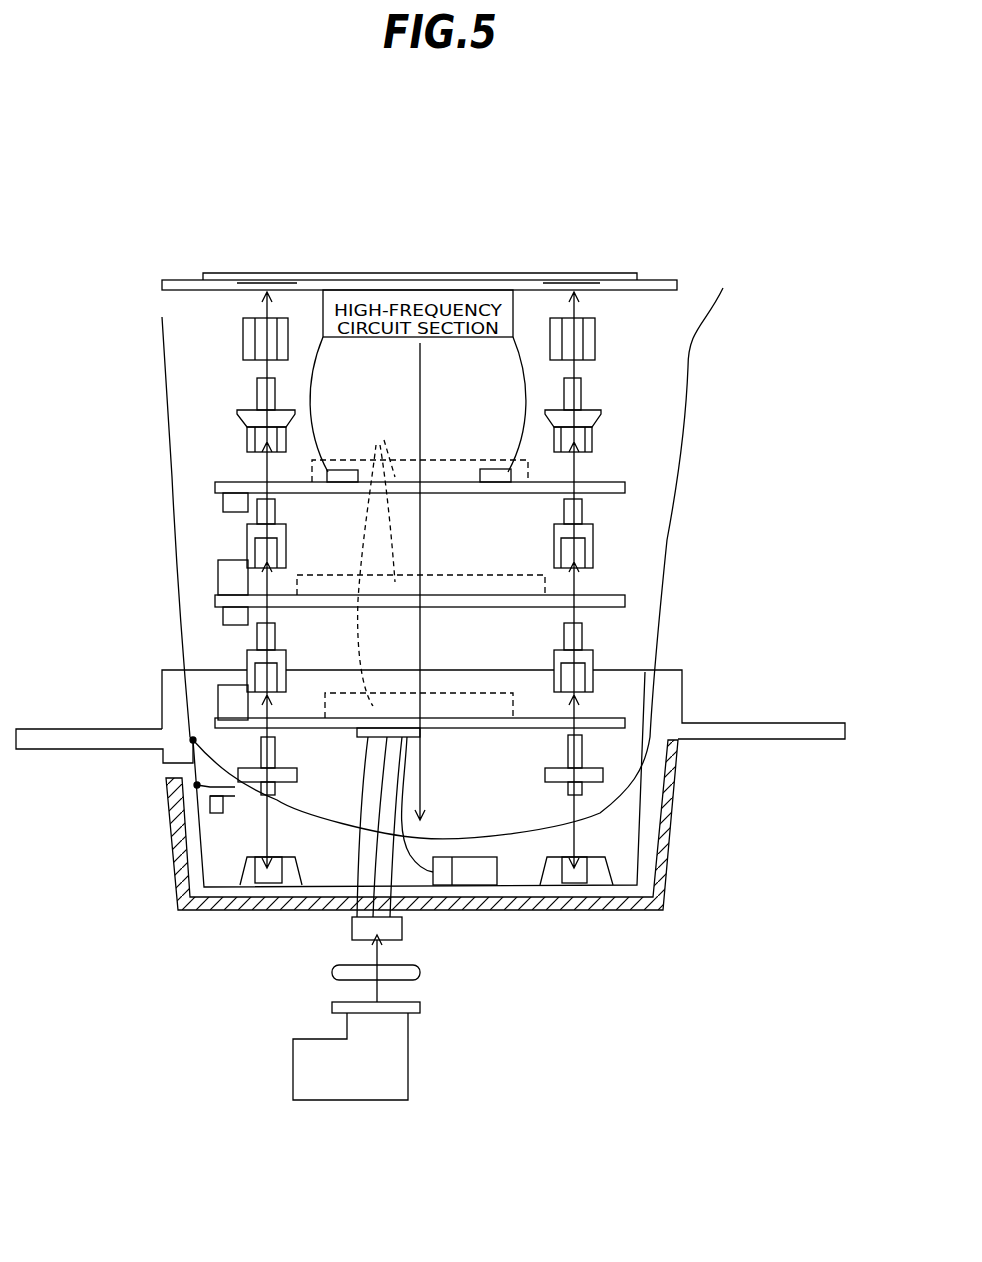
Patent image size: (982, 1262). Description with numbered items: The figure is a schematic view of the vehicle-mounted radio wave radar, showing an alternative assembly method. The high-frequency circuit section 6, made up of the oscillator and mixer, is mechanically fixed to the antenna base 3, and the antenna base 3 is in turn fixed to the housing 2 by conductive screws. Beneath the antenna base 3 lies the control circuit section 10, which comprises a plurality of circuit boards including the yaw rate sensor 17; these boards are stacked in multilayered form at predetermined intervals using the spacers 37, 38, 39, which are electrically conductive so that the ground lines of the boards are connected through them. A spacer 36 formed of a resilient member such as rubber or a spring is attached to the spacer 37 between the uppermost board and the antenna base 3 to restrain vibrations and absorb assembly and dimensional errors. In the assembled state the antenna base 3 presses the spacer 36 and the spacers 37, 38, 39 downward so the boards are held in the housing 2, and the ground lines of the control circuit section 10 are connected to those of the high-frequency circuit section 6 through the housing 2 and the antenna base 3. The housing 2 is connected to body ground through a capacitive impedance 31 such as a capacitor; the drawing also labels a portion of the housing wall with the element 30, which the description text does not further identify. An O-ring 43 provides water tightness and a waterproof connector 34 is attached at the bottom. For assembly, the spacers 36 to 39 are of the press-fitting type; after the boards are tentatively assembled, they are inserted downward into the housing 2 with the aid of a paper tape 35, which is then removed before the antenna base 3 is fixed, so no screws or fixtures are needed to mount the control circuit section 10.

The housing 2 is at (200, 888).
The antenna base 3 is at (183, 280).
The high-frequency circuit section 6 is at (335, 297).
The control circuit section 10 is at (378, 447).
The yaw rate sensor 17 is at (472, 872).
The case body 30 is at (175, 853).
The capacitive impedance 31 is at (237, 810).
The waterproof connector 34 is at (293, 1068).
The paper tape 35 is at (690, 337).
The spacer with the function of absorbing vibrations 36 is at (243, 338).
The spacer 37 is at (247, 436).
The spacer 38 is at (247, 660).
The spacer 39 is at (260, 762).
The O-ring 43 is at (332, 972).